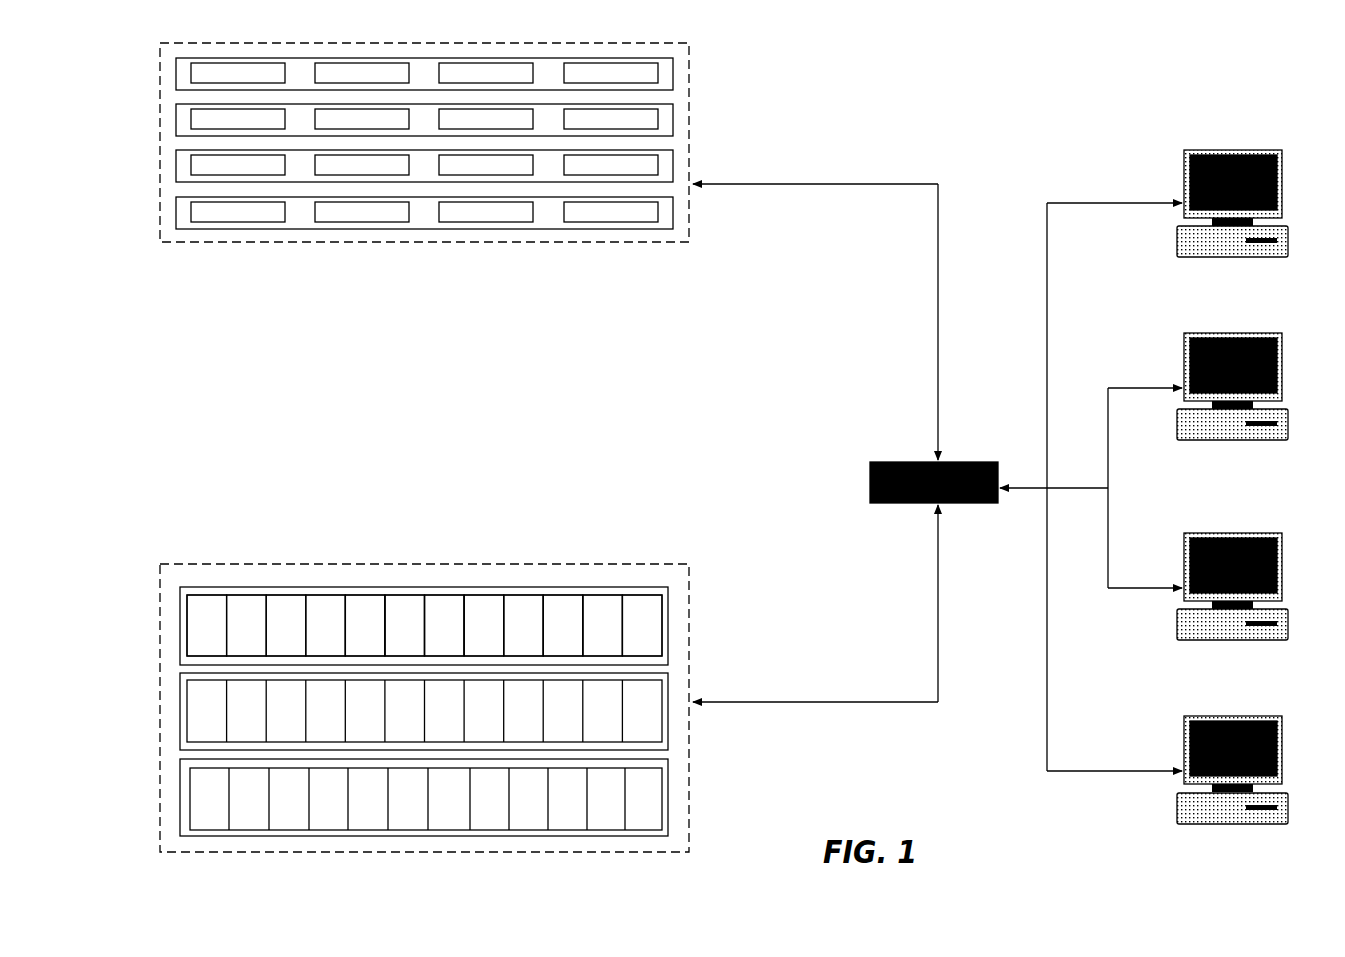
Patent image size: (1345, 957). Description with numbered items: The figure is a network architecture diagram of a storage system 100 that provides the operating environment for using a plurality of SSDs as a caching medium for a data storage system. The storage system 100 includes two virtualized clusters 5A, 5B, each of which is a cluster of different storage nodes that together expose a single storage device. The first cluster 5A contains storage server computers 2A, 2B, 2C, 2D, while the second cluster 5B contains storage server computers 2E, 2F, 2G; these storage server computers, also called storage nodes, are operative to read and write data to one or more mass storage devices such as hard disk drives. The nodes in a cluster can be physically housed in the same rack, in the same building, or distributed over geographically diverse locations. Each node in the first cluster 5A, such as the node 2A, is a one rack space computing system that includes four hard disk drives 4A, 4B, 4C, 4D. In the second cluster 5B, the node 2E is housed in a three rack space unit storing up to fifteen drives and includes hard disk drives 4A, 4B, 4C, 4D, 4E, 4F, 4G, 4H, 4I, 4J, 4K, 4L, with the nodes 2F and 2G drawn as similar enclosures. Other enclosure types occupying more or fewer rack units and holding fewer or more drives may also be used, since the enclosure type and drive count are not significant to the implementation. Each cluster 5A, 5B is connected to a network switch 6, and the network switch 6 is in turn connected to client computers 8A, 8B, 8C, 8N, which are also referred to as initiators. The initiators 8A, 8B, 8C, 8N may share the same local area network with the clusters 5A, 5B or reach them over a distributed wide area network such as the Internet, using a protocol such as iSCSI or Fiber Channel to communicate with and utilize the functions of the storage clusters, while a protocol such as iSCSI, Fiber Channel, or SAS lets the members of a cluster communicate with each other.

The storage system 100 is at (1027, 85).
The virtualized cluster 5A is at (680, 68).
The virtualized cluster 5B is at (674, 583).
The storage server computer 2A is at (461, 357).
The storage server computer 2B is at (667, 131).
The storage server computer 2C is at (667, 177).
The storage server computer 2D is at (667, 223).
The storage server computer 2E is at (469, 626).
The storage server computer 2F is at (667, 683).
The storage server computer 2G is at (667, 769).
The hard disk drive 4A is at (226, 85).
The hard disk drive 4B is at (350, 85).
The hard disk drive 4C is at (474, 85).
The hard disk drive 4D is at (599, 85).
The hard disk drive 4E is at (353, 638).
The hard disk drive 4F is at (417, 638).
The hard disk drive 4G is at (432, 638).
The hard disk drive 4H is at (496, 638).
The hard disk drive 4I is at (514, 638).
The hard disk drive 4J is at (552, 638).
The hard disk drive 4K is at (615, 638).
The hard disk drive 4L is at (631, 638).
The network switch 6 is at (974, 504).
The client computer 8A is at (1268, 256).
The client computer 8B is at (1275, 441).
The client computer 8C is at (1275, 641).
The client computer 8N is at (1275, 825).